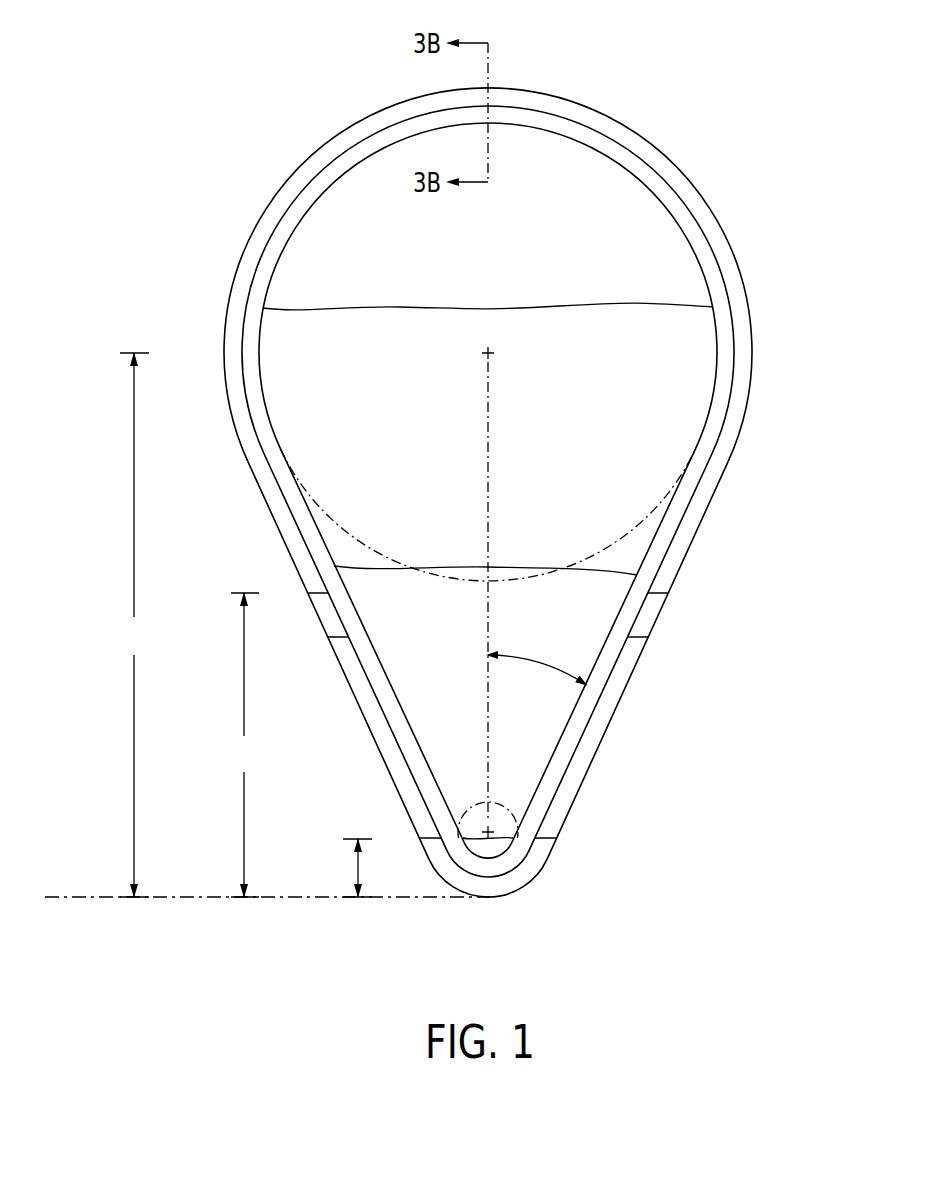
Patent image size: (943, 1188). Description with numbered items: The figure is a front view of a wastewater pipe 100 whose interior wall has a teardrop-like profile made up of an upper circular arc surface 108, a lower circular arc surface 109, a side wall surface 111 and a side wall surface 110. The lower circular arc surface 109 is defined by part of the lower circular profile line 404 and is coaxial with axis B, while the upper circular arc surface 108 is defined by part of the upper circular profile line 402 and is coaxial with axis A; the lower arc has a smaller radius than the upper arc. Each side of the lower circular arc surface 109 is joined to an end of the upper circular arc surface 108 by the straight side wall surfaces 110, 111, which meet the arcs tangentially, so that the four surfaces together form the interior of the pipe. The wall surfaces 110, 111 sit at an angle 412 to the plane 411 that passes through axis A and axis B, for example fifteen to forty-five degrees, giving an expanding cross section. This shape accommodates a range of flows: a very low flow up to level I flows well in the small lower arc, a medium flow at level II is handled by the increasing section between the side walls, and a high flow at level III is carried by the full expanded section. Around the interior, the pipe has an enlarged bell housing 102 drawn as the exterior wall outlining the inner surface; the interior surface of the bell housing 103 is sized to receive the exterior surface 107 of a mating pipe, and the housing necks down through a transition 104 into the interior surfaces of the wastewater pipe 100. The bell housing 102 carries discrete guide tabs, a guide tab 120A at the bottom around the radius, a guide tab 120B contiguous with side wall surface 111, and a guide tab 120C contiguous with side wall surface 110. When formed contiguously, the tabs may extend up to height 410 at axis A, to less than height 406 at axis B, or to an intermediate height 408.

The wastewater pipe 100 is at (198, 139).
The bell housing 102 is at (742, 308).
The interior surface of the bell housing 103 is at (252, 281).
The transition 104 is at (678, 207).
The exterior surface 107 is at (607, 740).
The upper circular arc surface 108 is at (503, 123).
The lower circular arc surface 109 is at (487, 862).
The side wall surface 110 is at (635, 583).
The side wall surface 111 is at (314, 523).
The guide tab 120A is at (535, 866).
The guide tab 120B is at (323, 612).
The guide tab 120C is at (652, 617).
The upper circular profile line 402 is at (650, 512).
The lower circular profile line 404 is at (505, 800).
The height 406 is at (355, 868).
The height 408 is at (244, 745).
The height 410 is at (135, 625).
The plane 411 is at (488, 470).
The angle 412 is at (536, 689).
The level I is at (508, 837).
The level II is at (542, 563).
The level III is at (620, 307).